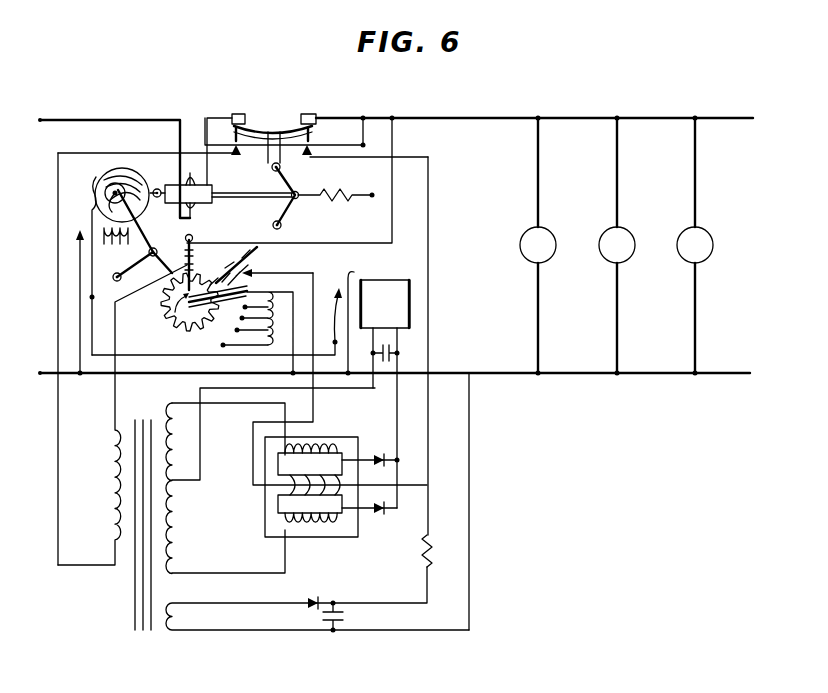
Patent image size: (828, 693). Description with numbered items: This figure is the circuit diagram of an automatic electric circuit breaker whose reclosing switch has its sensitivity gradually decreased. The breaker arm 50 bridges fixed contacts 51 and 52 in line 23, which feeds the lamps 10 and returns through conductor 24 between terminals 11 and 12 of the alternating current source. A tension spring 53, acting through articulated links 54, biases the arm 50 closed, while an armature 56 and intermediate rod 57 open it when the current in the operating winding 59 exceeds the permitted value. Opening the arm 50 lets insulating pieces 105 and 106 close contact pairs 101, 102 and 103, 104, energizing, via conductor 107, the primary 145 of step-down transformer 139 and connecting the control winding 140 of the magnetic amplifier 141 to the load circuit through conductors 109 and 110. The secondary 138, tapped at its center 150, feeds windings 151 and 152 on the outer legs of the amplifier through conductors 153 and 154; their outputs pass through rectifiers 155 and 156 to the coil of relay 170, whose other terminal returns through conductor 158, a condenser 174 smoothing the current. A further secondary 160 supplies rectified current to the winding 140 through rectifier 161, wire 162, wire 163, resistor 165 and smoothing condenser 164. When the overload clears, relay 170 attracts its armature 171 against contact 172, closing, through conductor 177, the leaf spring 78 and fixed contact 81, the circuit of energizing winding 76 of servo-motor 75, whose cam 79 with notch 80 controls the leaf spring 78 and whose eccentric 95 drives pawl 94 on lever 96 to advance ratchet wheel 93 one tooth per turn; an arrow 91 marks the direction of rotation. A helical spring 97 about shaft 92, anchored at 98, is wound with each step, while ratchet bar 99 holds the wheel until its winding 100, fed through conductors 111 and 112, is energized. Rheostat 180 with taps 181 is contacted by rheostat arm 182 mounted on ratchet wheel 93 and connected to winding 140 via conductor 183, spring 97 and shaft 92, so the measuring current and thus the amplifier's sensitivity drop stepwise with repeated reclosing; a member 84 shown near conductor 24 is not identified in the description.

The lamps 10 is at (622, 246).
The terminal 11 is at (48, 116).
The terminal 12 is at (44, 371).
The conductor 23 is at (590, 118).
The conductor 24 is at (585, 378).
The circuit breaker arm 50 is at (272, 128).
The fixed contact 51 is at (244, 111).
The fixed contact 52 is at (306, 116).
The tension spring 53 is at (340, 186).
The articulated links 54 is at (285, 211).
The armature 56 is at (208, 190).
The intermediate rod 57 is at (250, 199).
The operating winding 59 is at (180, 183).
The servo-motor 75 is at (122, 189).
The energizing winding 76 is at (122, 243).
The leaf spring 78 is at (92, 210).
The cam 79 is at (160, 200).
The notch 80 is at (106, 187).
The fixed contact 81 is at (70, 290).
The conductor 84 is at (71, 301).
The arrow 91 is at (172, 312).
The shaft 92 is at (214, 281).
The ratchet wheel 93 is at (203, 325).
The pawl 94 is at (144, 236).
The eccentric 95 is at (113, 207).
The lever 96 is at (128, 270).
The helical spring 97 is at (238, 262).
The stationary anchor 98 is at (277, 269).
The ratchet bar 99 is at (194, 243).
The winding 100 is at (184, 256).
The contact member 101 is at (240, 146).
The contact member 102 is at (230, 155).
The contact member 103 is at (306, 146).
The contact member 104 is at (304, 156).
The insulating piece 105 is at (235, 135).
The insulating piece 106 is at (312, 135).
The conductor 107 is at (58, 270).
The conductor 109 is at (430, 258).
The conductor 110 is at (470, 484).
The conductor 111 is at (392, 214).
The conductor 112 is at (104, 306).
The secondary 138 is at (172, 440).
The step-down transformer 139 is at (147, 537).
The control winding 140 is at (330, 468).
The magnetic amplifier 141 is at (324, 478).
The primary 145 is at (115, 488).
The center tap 150 is at (176, 484).
The winding 151 is at (336, 440).
The winding 152 is at (332, 540).
The conductor 153 is at (256, 404).
The conductor 154 is at (249, 574).
The rectifier 155 is at (384, 453).
The rectifier 156 is at (384, 516).
The conductor 158 is at (347, 385).
The secondary 160 is at (180, 617).
The rectifier 161 is at (318, 598).
The wire 162 is at (422, 630).
The wire 163 is at (388, 604).
The condenser 164 is at (344, 617).
The resistor 165 is at (441, 551).
The relay 170 is at (386, 284).
The armature 171 is at (327, 316).
The contact 172 is at (352, 276).
The condenser 174 is at (391, 360).
The conductor 177 is at (152, 350).
The rheostat 180 is at (284, 318).
The taps 181 is at (230, 338).
The rheostat arm 182 is at (252, 290).
The conductor 183 is at (313, 273).